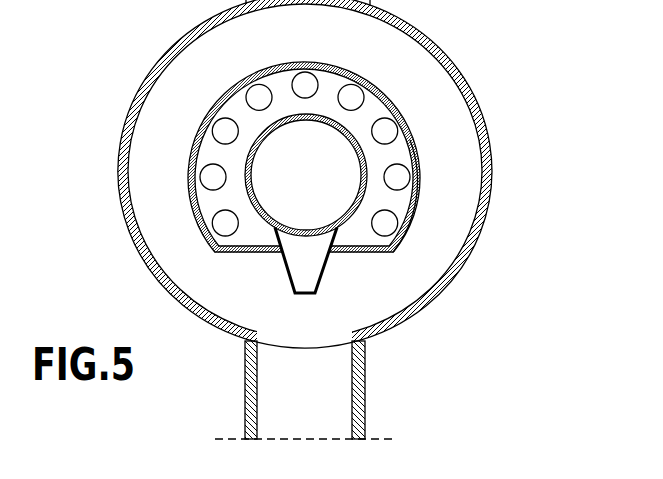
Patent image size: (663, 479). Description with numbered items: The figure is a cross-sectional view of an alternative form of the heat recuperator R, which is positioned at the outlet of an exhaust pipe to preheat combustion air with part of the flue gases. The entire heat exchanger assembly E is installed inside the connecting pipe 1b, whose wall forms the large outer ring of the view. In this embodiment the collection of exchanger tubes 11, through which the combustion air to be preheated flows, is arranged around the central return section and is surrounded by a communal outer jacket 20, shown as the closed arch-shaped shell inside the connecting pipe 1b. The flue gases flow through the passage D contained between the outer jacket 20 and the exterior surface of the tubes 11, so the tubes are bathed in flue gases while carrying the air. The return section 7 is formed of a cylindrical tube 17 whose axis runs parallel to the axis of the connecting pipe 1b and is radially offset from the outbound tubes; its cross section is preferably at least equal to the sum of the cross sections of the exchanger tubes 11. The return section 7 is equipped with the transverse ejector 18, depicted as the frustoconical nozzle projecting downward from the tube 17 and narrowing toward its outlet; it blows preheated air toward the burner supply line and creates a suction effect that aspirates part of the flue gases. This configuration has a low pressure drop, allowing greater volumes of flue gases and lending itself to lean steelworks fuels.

The heat recuperator R is at (117, 45).
The connecting pipe 1b is at (127, 138).
The heat exchanger E is at (198, 118).
The exchanger tubes 11 is at (366, 97).
The passage D is at (400, 156).
The communal outer jacket 20 is at (421, 173).
The return section 7 is at (371, 194).
The cylindrical tube 17 is at (244, 197).
The transverse ejector 18 is at (288, 262).